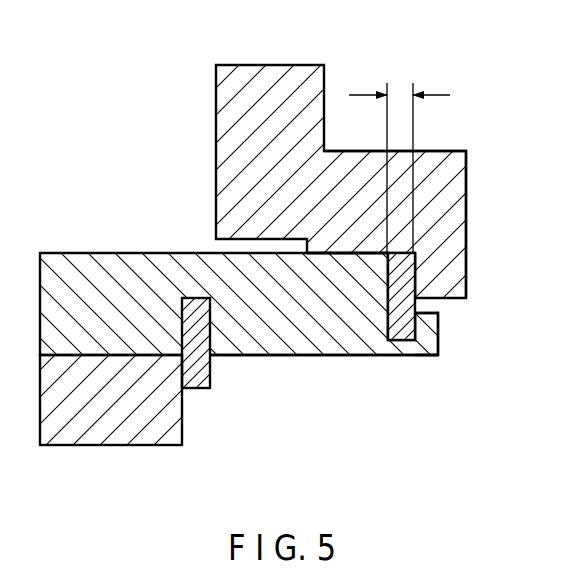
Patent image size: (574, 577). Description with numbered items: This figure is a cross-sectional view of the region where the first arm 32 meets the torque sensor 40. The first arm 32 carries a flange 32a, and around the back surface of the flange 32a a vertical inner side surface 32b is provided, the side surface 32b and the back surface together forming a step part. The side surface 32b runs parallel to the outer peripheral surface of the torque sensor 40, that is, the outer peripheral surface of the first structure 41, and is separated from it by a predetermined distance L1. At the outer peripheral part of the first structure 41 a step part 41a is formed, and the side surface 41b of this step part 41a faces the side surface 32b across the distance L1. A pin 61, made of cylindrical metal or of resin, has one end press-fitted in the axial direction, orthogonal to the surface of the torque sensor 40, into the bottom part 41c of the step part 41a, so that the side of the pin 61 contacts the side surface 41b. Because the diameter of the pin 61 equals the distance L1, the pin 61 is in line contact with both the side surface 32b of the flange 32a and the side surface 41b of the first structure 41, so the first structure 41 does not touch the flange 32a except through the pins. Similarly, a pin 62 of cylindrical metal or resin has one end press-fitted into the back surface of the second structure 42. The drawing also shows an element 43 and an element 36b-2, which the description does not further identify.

The first arm 32 is at (306, 72).
The flange 32a is at (453, 162).
The side surface 32b is at (398, 285).
The distance L1 is at (405, 90).
The torque sensor 40 is at (420, 430).
The first structure 41 is at (357, 340).
The step part 41a is at (364, 312).
The side surface 41b is at (388, 285).
The bottom part 41c is at (425, 318).
The second structure 42 is at (245, 340).
The plate intermediate portion 43 is at (303, 340).
The pin 61 is at (417, 292).
The pin 62 is at (205, 390).
The support block 36b-2 is at (62, 435).